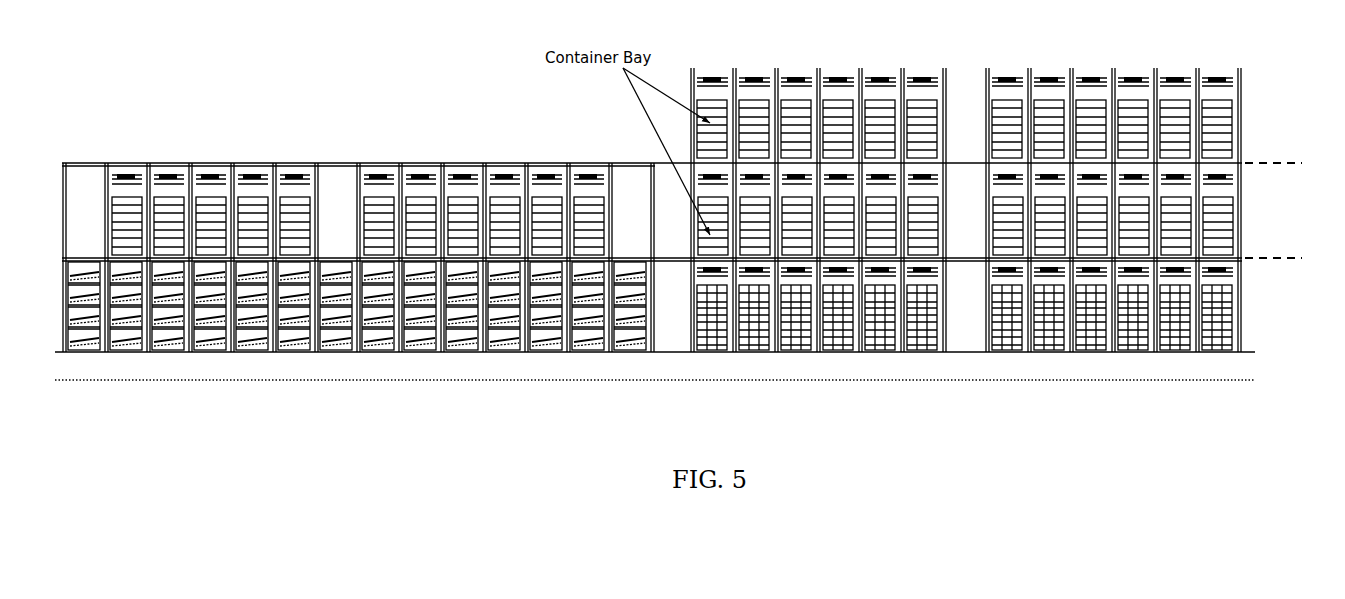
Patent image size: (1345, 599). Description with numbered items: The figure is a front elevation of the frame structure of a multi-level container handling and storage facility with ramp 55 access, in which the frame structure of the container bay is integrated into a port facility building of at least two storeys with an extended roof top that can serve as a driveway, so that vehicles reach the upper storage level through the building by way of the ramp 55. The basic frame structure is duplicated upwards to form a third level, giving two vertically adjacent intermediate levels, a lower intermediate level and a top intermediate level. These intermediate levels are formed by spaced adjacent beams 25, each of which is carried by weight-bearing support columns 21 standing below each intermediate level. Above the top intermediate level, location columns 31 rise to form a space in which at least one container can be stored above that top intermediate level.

The location columns 31 is at (987, 192).
The support columns 21 is at (1195, 340).
The spaced adjacent beams 25 is at (1240, 163).
The ramp 55 is at (292, 340).